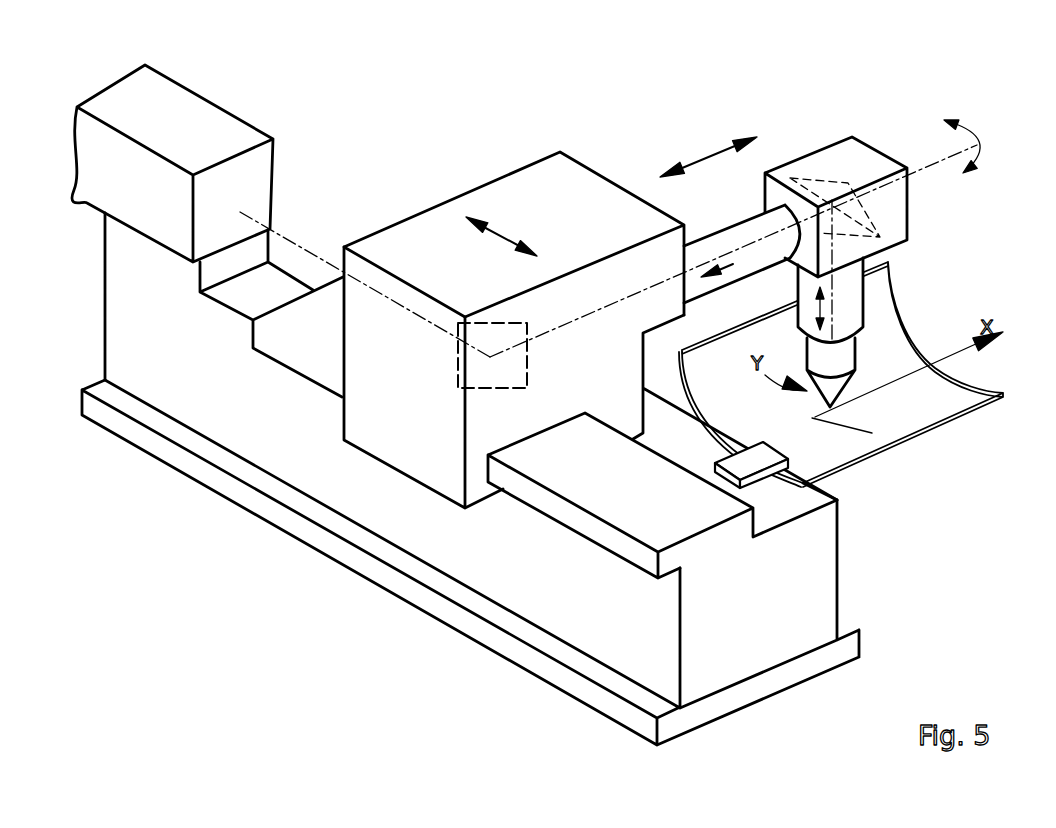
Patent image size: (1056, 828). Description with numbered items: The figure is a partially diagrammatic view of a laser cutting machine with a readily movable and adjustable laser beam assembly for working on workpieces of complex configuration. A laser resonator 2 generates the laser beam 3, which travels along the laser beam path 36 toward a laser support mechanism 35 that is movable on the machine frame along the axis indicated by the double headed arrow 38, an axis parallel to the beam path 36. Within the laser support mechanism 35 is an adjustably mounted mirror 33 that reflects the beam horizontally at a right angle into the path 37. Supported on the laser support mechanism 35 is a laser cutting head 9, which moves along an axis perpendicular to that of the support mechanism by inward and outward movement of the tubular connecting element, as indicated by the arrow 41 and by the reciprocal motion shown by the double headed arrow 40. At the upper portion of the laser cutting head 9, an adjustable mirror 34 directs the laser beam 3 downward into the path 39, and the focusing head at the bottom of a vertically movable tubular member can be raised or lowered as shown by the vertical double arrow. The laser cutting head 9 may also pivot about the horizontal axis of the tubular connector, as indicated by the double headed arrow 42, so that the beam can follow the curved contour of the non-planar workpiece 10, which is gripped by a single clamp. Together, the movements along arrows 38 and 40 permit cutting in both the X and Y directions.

The laser resonator 2 is at (208, 120).
The laser beam 3 is at (290, 228).
The laser cutting head 9 is at (915, 232).
The workpiece 10 is at (1003, 395).
The mirror 33 is at (458, 367).
The adjustable mirror 34 is at (820, 180).
The laser support mechanism 35 is at (432, 460).
The laser beam path 36 is at (324, 253).
The path 37 is at (580, 318).
The double headed arrow 38 is at (503, 236).
The path 39 is at (832, 310).
The double headed arrow 40 is at (707, 158).
The arrow 41 is at (733, 264).
The double headed arrow 42 is at (988, 150).